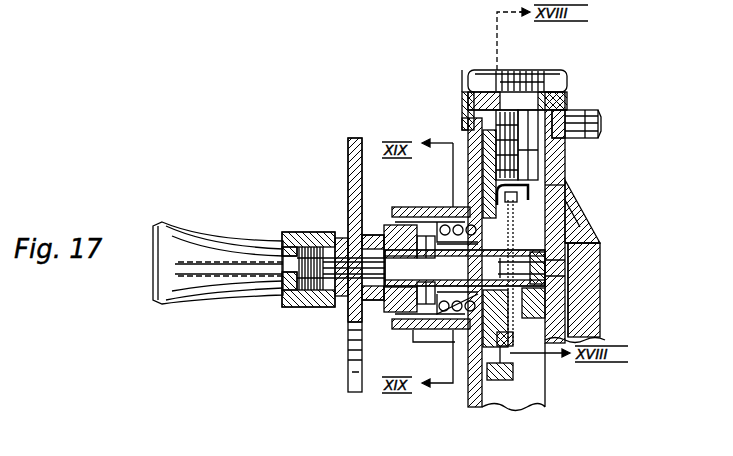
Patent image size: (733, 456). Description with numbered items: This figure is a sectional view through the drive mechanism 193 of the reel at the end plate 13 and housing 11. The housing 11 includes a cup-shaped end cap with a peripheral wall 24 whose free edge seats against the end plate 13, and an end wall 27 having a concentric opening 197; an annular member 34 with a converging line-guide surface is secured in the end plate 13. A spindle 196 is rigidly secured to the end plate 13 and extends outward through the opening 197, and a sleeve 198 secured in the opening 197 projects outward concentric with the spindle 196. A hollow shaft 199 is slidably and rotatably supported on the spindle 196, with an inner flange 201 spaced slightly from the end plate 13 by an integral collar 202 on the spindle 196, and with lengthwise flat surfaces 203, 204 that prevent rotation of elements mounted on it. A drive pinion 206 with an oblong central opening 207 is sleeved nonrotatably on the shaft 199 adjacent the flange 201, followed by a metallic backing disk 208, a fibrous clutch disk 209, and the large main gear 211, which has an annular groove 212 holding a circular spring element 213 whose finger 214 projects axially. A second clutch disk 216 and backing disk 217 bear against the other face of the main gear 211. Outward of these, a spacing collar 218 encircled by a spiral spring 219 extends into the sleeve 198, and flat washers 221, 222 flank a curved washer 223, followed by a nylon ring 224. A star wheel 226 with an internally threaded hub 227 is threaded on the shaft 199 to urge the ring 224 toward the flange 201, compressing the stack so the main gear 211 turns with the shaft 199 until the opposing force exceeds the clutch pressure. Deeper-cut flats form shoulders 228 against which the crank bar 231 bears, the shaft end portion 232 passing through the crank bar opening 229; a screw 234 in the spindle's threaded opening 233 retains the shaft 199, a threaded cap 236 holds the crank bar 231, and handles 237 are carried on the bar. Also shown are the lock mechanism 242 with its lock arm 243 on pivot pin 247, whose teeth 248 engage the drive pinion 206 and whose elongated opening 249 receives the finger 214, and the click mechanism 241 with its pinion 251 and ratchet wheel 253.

The housing 11 is at (460, 64).
The end plate 13 is at (560, 70).
The peripheral wall 24 is at (476, 93).
The end wall 27 is at (455, 205).
The annular member 34 is at (590, 243).
The drive mechanism 193 is at (295, 343).
The spindle 196 is at (568, 268).
The opening 197 is at (463, 140).
The sleeve 198 is at (450, 198).
The hollow shaft 199 is at (407, 318).
The flange 201 is at (537, 300).
The collar 202 is at (604, 283).
The flat surface 203 is at (500, 268).
The flat surface 204 is at (465, 268).
The drive pinion 206 is at (510, 316).
The oblong central opening 207 is at (575, 241).
The backing disk 208 is at (515, 338).
The clutch disk 209 is at (522, 350).
The main gear 211 is at (506, 380).
The annular groove 212 is at (482, 405).
The spring element 213 is at (455, 383).
The finger 214 is at (560, 188).
The clutch disk 216 is at (505, 198).
The backing disk 217 is at (470, 128).
The spacing collar 218 is at (463, 161).
The spiral spring 219 is at (440, 324).
The washer 221 is at (417, 328).
The washer 222 is at (411, 213).
The curved washer 223 is at (440, 213).
The ring 224 is at (400, 226).
The star wheel 226 is at (350, 146).
The hub 227 is at (345, 223).
The shoulder 228 is at (393, 310).
The opening 229 is at (338, 236).
The crank bar 231 is at (338, 310).
The end portion 232 is at (316, 308).
The threaded opening 233 is at (313, 236).
The screw 234 is at (292, 300).
The cap 236 is at (280, 240).
The handle 237 is at (152, 282).
The click mechanism 241 is at (530, 93).
The lock mechanism 242 is at (536, 191).
The lock arm 243 is at (600, 146).
The pivot pin 247 is at (560, 113).
The teeth 248 is at (568, 223).
The elongated opening 249 is at (552, 168).
The pinion 251 is at (478, 116).
The ratchet wheel 253 is at (510, 70).